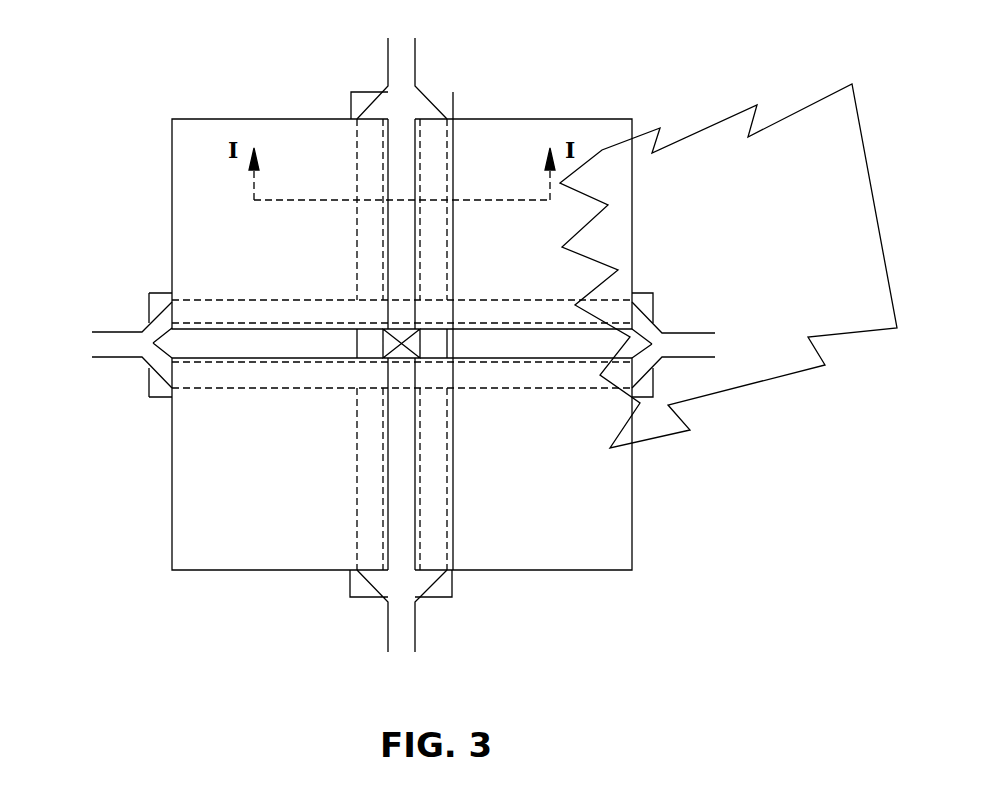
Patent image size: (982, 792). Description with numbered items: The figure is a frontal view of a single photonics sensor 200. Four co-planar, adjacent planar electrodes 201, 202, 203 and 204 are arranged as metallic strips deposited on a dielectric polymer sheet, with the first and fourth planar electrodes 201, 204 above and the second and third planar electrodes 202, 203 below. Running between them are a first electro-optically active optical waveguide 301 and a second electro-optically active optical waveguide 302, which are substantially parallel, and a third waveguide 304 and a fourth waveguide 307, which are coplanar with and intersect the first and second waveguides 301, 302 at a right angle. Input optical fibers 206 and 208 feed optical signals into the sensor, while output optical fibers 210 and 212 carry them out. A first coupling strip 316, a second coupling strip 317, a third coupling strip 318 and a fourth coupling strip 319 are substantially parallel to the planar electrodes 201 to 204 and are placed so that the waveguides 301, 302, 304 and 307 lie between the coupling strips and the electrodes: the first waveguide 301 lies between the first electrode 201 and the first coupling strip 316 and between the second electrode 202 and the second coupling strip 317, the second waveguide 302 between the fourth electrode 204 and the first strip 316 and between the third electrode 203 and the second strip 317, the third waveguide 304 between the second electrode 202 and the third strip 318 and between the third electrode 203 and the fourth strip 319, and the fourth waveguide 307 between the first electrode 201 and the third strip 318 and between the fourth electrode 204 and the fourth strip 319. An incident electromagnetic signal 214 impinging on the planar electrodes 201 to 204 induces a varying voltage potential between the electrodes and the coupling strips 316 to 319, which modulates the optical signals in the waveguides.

The photonics sensor 200 is at (158, 625).
The first planar electrode 201 is at (595, 132).
The second planar electrode 202 is at (625, 510).
The third planar electrode 203 is at (185, 517).
The fourth planar electrode 204 is at (182, 163).
The input optical fiber 206 is at (410, 55).
The input optical fiber 208 is at (697, 338).
The output optical fiber 210 is at (392, 627).
The output optical fiber 212 is at (115, 335).
The incident electromagnetic signal 214 is at (785, 373).
The first electro-optically active optical waveguide 301 is at (440, 341).
The second electro-optically active optical waveguide 302 is at (370, 337).
The third electro-optically active optical waveguide 304 is at (401, 378).
The fourth electro-optically active optical waveguide 307 is at (410, 313).
The first coupling strip 316 is at (362, 98).
The second coupling strip 317 is at (448, 588).
The third coupling strip 318 is at (652, 302).
The fourth coupling strip 319 is at (150, 385).